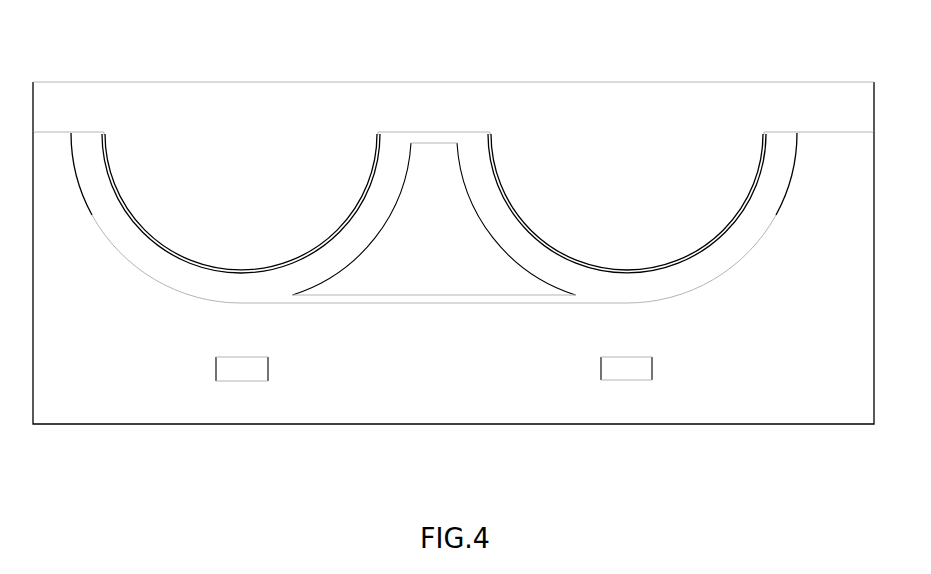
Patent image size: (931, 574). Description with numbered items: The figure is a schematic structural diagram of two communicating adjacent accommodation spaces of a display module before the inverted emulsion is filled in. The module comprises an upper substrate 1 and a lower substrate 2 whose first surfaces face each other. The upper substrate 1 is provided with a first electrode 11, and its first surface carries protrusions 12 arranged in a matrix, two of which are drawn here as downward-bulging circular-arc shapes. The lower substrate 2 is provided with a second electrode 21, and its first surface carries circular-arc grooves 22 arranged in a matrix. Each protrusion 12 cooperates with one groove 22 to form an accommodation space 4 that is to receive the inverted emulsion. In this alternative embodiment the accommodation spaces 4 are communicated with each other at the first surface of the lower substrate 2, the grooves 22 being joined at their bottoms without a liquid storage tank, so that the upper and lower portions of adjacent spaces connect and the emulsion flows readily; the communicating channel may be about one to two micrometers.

The upper substrate 1 is at (399, 82).
The lower substrate 2 is at (455, 424).
The accommodation space 4 is at (87, 168).
The first electrode 11 is at (113, 170).
The protrusion 12 is at (220, 235).
The second electrode 21 is at (248, 372).
The groove 22 is at (158, 283).